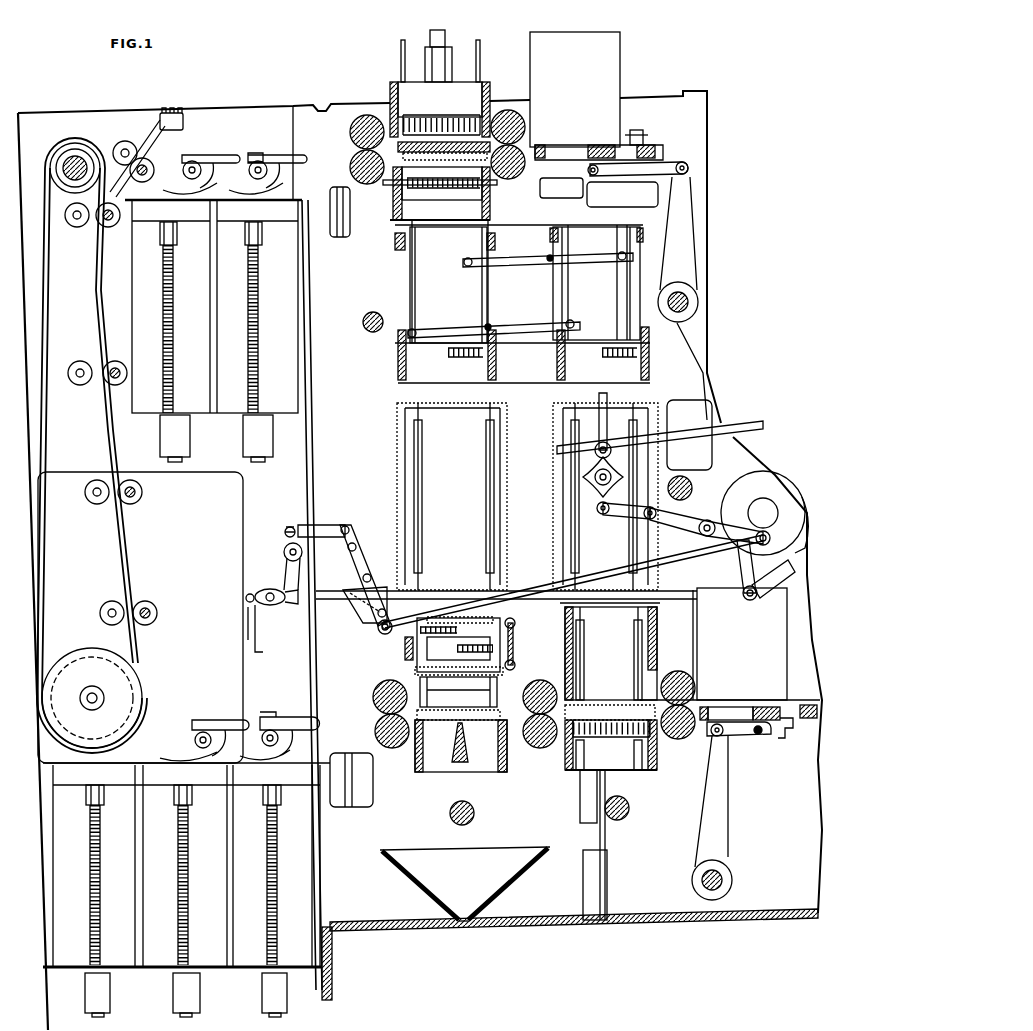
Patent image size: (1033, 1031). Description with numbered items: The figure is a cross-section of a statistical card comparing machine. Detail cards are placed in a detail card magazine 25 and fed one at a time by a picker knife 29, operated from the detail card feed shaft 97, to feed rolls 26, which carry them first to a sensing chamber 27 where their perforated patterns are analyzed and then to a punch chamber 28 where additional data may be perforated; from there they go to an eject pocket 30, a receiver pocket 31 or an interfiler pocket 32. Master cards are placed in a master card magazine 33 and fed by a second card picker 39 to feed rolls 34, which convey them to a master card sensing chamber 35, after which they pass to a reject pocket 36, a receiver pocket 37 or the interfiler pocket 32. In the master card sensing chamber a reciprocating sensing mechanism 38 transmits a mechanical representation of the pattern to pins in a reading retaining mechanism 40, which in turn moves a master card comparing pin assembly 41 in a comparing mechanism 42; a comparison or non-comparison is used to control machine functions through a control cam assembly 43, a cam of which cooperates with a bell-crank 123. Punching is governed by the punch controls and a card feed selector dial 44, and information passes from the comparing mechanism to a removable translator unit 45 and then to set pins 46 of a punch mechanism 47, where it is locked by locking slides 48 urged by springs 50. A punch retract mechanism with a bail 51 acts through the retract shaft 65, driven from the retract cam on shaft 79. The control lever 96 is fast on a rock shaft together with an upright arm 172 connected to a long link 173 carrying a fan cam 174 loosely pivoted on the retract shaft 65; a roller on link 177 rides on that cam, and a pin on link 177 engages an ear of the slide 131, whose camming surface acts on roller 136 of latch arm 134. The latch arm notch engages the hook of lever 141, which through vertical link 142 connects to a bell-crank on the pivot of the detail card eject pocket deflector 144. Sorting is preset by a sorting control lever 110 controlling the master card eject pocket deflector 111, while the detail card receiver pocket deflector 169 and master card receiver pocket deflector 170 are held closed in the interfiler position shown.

The detail card magazine 25 is at (734, 651).
The feed rolls 26 is at (707, 690).
The sensing chamber 27 is at (610, 702).
The punch chamber 28 is at (453, 727).
The picker knife 29 is at (783, 723).
The eject pocket 30 is at (283, 857).
The receiver pocket 31 is at (199, 859).
The interfiler pocket 32 is at (104, 861).
The master card magazine 33 is at (561, 77).
The feed rolls 34 is at (525, 135).
The master card sensing chamber 35 is at (425, 148).
The reject pocket 36 is at (266, 299).
The receiver pocket 37 is at (181, 301).
The reciprocating sensing mechanism 38 is at (390, 95).
The second card picker 39 is at (625, 156).
The reading retaining mechanism 40 is at (418, 209).
The master card comparing pin assembly 41 is at (428, 294).
The comparing mechanism 42 is at (513, 289).
The control cam assembly 43 is at (596, 480).
The card feed selector dial 44 is at (788, 488).
The removable translator unit 45 is at (436, 437).
The set pins 46 is at (510, 612).
The punch mechanism 47 is at (329, 671).
The locking slides 48 is at (512, 636).
The springs 50 is at (513, 656).
The bail 51 is at (404, 657).
The retract shaft 65 is at (383, 632).
The shaft 79 is at (468, 826).
The control lever 96 is at (790, 575).
The detail card feed shaft 97 is at (722, 880).
The sorting control lever 110 is at (676, 440).
The master card eject pocket deflector 111 is at (268, 156).
The bell-crank 123 is at (607, 514).
The slide 131 is at (319, 527).
The latch arm 134 is at (292, 573).
The roller 136 is at (285, 537).
The lever 141 is at (290, 607).
The vertical link 142 is at (253, 640).
The detail card eject pocket deflector 144 is at (283, 723).
The detail card receiver pocket deflector 169 is at (212, 727).
The master card receiver pocket deflector 170 is at (196, 160).
The upright arm 172 is at (742, 570).
The link 173 is at (695, 555).
The fan cam 174 is at (362, 617).
The link 177 is at (355, 560).